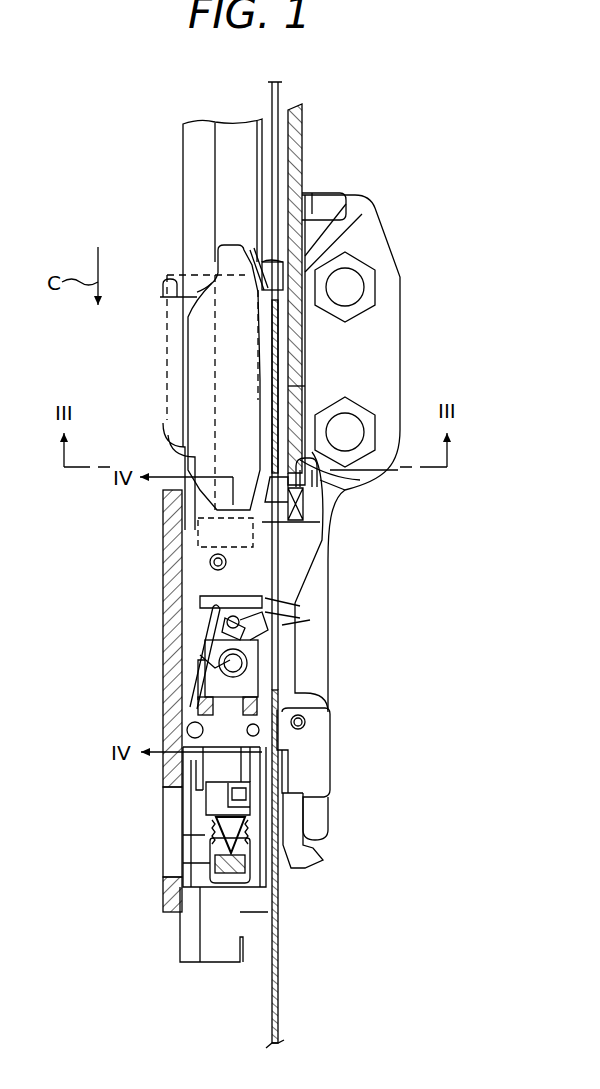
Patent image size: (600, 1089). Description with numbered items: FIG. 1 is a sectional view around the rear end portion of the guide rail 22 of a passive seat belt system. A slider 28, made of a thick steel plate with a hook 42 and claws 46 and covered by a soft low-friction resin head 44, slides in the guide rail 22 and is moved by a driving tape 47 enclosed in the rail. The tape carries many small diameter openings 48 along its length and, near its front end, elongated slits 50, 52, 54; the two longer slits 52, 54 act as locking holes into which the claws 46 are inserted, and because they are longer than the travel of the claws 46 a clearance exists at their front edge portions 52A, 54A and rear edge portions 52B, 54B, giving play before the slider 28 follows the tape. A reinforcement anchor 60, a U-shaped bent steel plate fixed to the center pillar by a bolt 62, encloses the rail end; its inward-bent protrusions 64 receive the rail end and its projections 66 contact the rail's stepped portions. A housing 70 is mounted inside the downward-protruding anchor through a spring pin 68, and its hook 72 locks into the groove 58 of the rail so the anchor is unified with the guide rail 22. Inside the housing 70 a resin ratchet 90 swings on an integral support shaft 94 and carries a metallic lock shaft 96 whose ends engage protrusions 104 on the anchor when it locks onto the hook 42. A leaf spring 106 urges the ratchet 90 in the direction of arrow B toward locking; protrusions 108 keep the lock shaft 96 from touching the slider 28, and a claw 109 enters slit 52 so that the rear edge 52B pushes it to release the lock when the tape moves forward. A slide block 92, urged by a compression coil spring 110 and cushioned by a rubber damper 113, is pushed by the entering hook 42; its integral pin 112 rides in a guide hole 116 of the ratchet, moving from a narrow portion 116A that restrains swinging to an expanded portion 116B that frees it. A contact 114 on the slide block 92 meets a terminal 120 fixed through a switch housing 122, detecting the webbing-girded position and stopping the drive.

The guide rail 22 is at (318, 138).
The slider 28 is at (168, 280).
The hook 42 is at (175, 590).
The head 44 is at (235, 358).
The claw 46 is at (305, 262).
The driving tape 47 is at (281, 92).
The small diameter openings 48 is at (277, 872).
The elongated slit 50 is at (304, 722).
The elongated slit 52 is at (318, 540).
The longitudinal edge portion 52A is at (325, 482).
The longitudinal edge portion 52B is at (282, 636).
The elongated slit 54 is at (295, 358).
The longitudinal edge portion 54A is at (360, 216).
The longitudinal edge portion 54B is at (292, 402).
The groove 58 is at (320, 472).
The reinforcement anchor 60 is at (400, 345).
The bolt 62 is at (378, 289).
The protrusions 64 is at (318, 210).
The projections 66 is at (384, 472).
The spring pin 68 is at (304, 724).
The housing 70 is at (320, 583).
The hook 72 is at (360, 480).
The ratchet 90 is at (262, 668).
The slide block 92 is at (205, 771).
The support shaft 94 is at (205, 670).
The lock shaft 96 is at (208, 562).
The protrusions 104 is at (200, 532).
The leaf spring 106 is at (205, 628).
The protrusions 108 is at (290, 604).
The claw 109 is at (285, 625).
The compression coil spring 110 is at (190, 864).
The pin 112 is at (228, 624).
The rubber damper 113 is at (200, 702).
The contact 114 is at (215, 808).
The guide hole 116 is at (280, 642).
The narrow portion 116A is at (200, 607).
The expanded portion 116B is at (200, 660).
The terminal 120 is at (195, 826).
The switch housing 122 is at (212, 958).
The arrow B is at (272, 560).